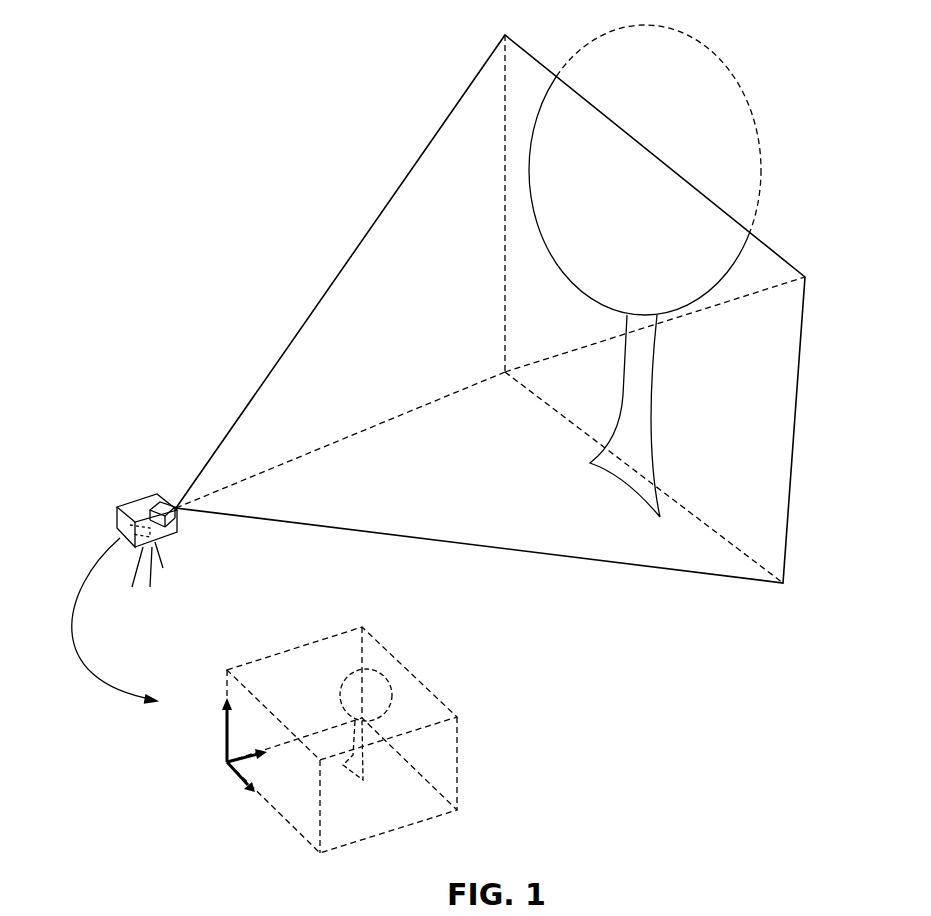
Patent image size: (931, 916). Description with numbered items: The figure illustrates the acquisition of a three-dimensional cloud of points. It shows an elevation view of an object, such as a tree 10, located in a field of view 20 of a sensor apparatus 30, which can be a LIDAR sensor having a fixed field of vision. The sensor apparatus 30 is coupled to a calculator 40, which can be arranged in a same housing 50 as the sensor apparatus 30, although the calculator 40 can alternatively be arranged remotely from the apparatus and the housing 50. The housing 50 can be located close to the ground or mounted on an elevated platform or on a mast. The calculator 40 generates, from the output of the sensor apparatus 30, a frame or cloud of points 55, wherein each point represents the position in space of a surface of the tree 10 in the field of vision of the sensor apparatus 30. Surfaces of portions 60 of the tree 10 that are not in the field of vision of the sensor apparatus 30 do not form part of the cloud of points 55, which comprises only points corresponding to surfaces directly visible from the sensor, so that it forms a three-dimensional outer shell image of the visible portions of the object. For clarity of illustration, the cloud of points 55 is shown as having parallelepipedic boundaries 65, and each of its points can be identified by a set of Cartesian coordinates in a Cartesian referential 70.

The tree 10 is at (702, 271).
The field of view 20 is at (780, 440).
The sensor apparatus 30 is at (133, 505).
The calculator 40 is at (150, 535).
The housing 50 is at (117, 524).
The cloud of points 55 is at (392, 700).
The portions of object 60 is at (727, 75).
The parallelepipedic boundaries 65 is at (457, 764).
The Cartesian referential 70 is at (226, 741).